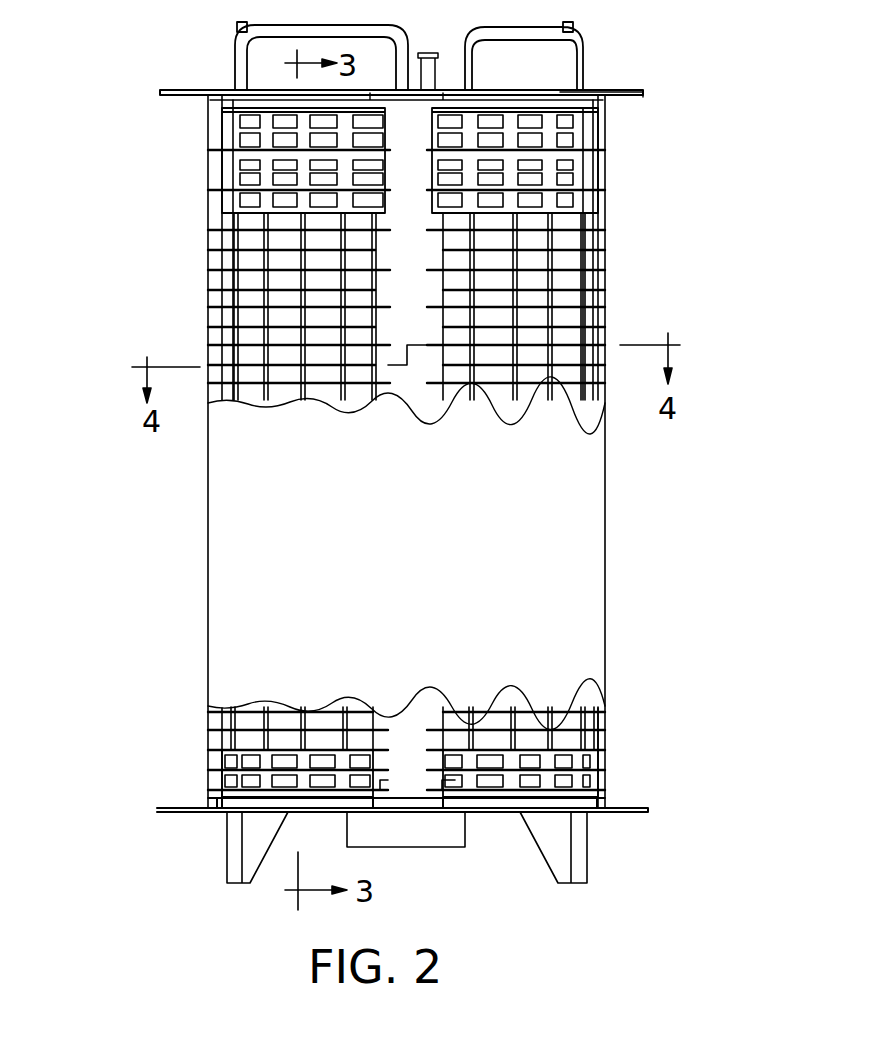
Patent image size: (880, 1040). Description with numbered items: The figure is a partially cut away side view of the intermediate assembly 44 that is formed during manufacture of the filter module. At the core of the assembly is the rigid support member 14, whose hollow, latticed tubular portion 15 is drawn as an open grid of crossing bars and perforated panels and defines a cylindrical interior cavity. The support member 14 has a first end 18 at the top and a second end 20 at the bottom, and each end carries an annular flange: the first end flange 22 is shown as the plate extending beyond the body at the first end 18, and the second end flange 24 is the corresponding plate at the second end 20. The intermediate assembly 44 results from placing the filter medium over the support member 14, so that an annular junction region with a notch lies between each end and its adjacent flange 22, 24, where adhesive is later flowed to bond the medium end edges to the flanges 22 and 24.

The rigid support member 14 is at (603, 213).
The latticed tubular portion 15 is at (563, 148).
The first end 18 is at (162, 92).
The second end 20 is at (160, 810).
The first end flange 22 is at (620, 90).
The second end flange 24 is at (613, 813).
The intermediate assembly 44 is at (175, 212).